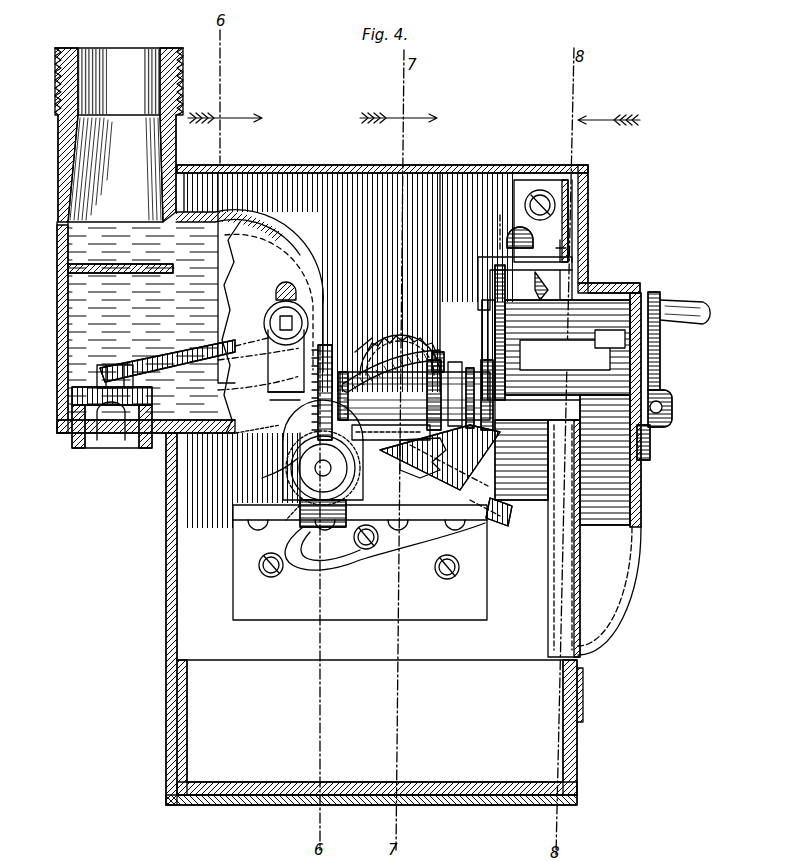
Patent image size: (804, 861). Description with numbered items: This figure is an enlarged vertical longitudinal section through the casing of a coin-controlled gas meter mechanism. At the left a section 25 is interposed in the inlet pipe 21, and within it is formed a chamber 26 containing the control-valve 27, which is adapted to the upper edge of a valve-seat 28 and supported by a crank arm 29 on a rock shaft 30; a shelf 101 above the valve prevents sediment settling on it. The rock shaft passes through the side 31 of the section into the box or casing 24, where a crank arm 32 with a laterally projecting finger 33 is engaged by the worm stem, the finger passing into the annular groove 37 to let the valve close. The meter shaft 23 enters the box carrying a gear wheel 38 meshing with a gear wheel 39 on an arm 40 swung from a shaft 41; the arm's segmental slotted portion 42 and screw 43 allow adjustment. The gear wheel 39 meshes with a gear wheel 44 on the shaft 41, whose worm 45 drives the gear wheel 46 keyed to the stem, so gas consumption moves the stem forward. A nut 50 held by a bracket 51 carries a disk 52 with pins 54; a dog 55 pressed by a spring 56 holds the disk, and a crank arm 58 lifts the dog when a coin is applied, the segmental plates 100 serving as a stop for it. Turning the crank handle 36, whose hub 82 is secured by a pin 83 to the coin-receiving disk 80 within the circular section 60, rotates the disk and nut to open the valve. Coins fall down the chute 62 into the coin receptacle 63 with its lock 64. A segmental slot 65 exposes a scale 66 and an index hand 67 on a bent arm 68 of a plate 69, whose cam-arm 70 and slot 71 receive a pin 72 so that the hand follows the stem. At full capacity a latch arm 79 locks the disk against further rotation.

The inlet pipe 21 is at (105, 135).
The shelf 101 is at (90, 263).
The chamber 26 is at (90, 322).
The section 25 is at (56, 337).
The control-valve 27 is at (88, 386).
The valve-seat 28 is at (72, 416).
The crank arm 29 is at (214, 346).
The rock shaft 30 is at (278, 318).
The side of the section 31 is at (190, 321).
The crank arm 32 is at (300, 350).
The arm or finger 33 is at (300, 380).
The box or casing 24 is at (588, 168).
The circular forwardly projecting section 60 is at (636, 288).
The chute 62 is at (609, 591).
The drawer or coin receptacle 63 is at (371, 732).
The lock 64 is at (583, 702).
The crank handle 36 is at (658, 345).
The annular groove 37 is at (280, 436).
The gear wheel 38 is at (408, 336).
The gear wheel 39 is at (432, 462).
The arm 40 is at (391, 432).
The shaft 41 is at (322, 476).
The segmental slotted portion 42 is at (348, 563).
The screw 43 is at (376, 545).
The gear wheel 44 is at (298, 505).
The worm 45 is at (274, 479).
The gear wheel 46 is at (332, 352).
The nut 50 is at (500, 402).
The bracket 51 is at (512, 512).
The disk 52 is at (495, 300).
The pins 54 is at (495, 318).
The dog 55 is at (488, 260).
The spring 56 is at (521, 220).
The crank arm 58 is at (548, 288).
The segmental slot 65 is at (588, 238).
The scale 66 is at (580, 212).
The index hand 67 is at (580, 258).
The bent arm 68 is at (482, 340).
The plate 69 is at (440, 461).
The cam-arm 70 is at (348, 378).
The slot 71 is at (372, 348).
The pin 72 is at (440, 352).
The shaft 23 is at (420, 330).
The arm 79 is at (492, 522).
The disk 80 is at (630, 372).
The hub 82 is at (672, 426).
The pin 83 is at (674, 392).
The segmental plates 100 is at (567, 347).